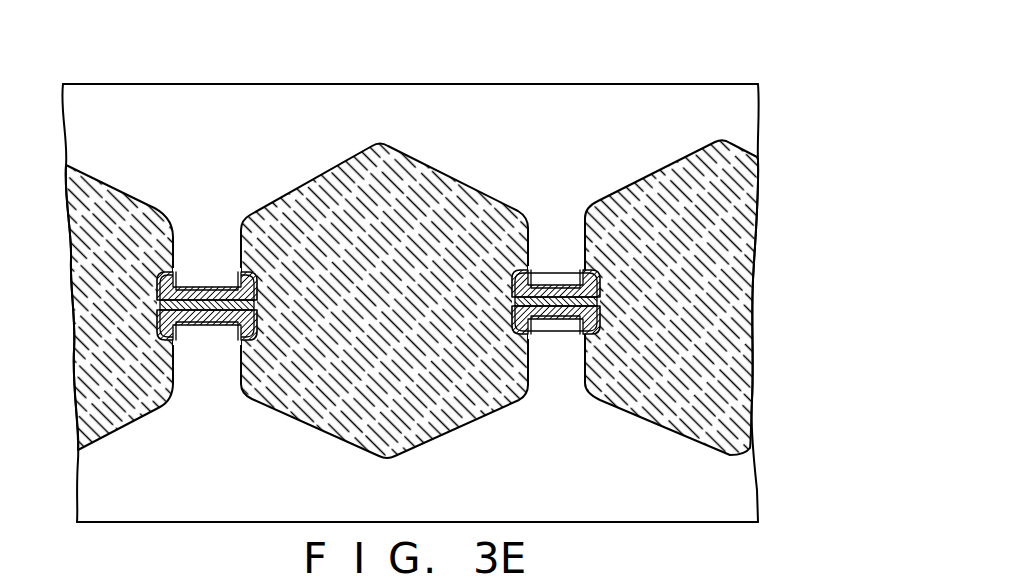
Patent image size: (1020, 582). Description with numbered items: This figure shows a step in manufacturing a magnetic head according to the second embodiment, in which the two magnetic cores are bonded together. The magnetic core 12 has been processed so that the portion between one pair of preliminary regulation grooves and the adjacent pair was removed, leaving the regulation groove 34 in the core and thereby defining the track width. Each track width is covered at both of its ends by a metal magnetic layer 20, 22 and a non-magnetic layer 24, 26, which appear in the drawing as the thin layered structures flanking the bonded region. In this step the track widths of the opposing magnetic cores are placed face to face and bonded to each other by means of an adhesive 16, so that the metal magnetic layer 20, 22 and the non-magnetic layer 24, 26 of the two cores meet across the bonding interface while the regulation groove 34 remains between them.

The magnetic core 12 is at (697, 97).
The adhesive 16 is at (748, 393).
The regulation groove 34 is at (445, 177).
The metal magnetic layer 20 is at (542, 295).
The non-magnetic layer 24 is at (562, 292).
The metal magnetic layer 22 is at (532, 333).
The non-magnetic layer 26 is at (560, 336).